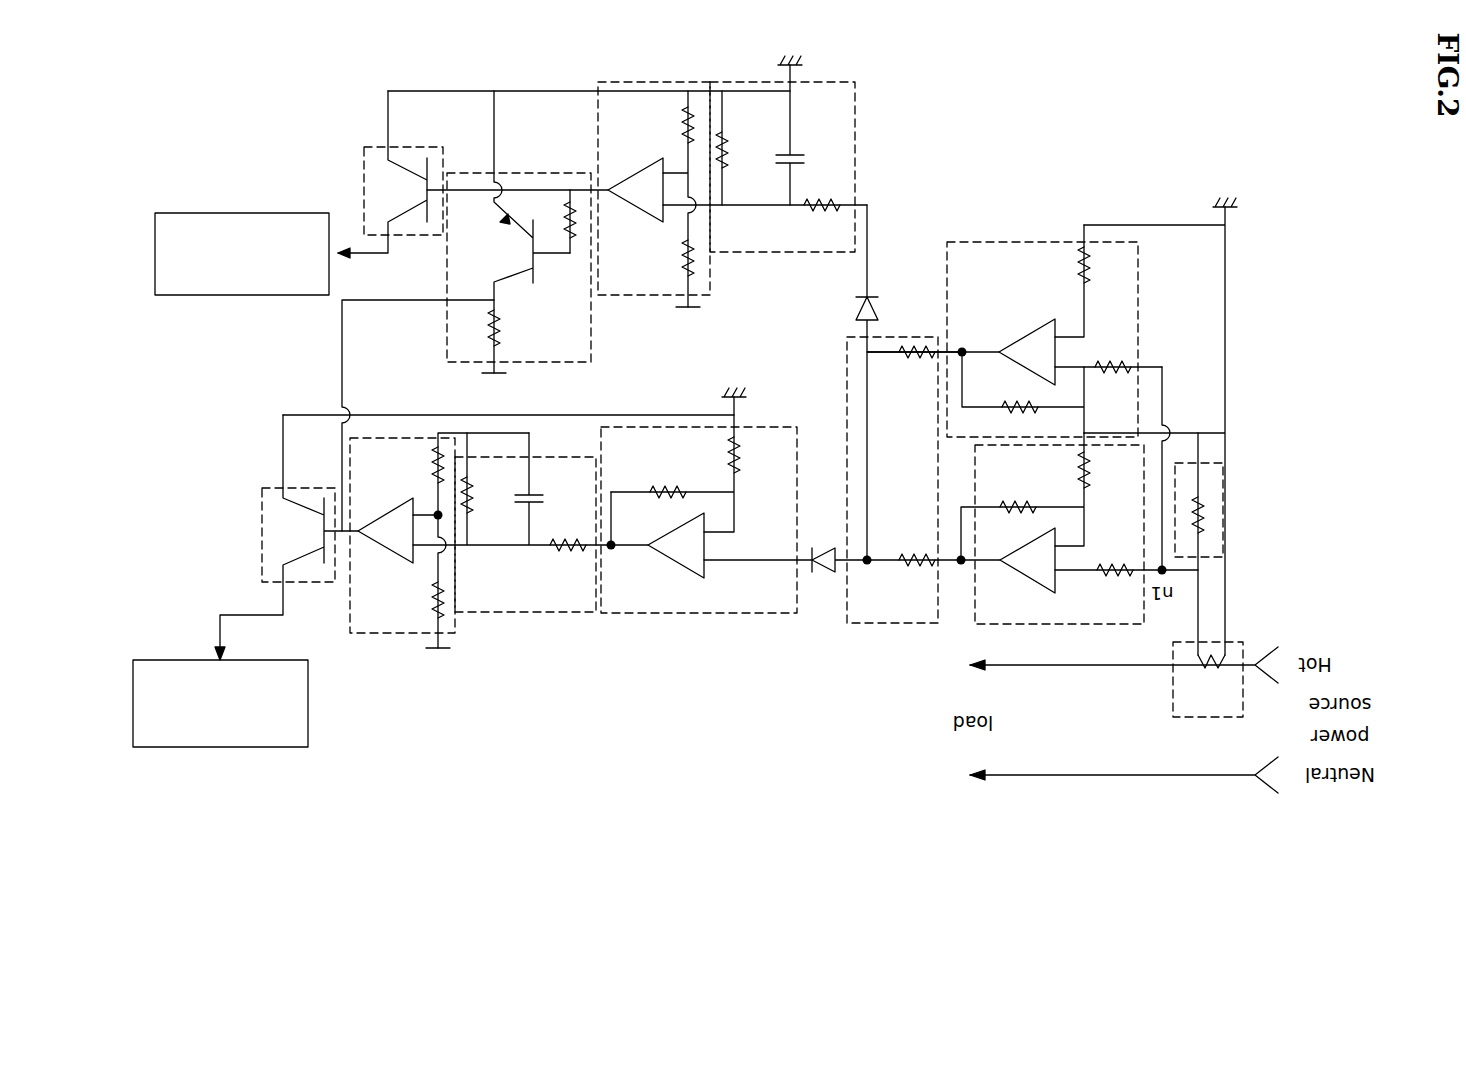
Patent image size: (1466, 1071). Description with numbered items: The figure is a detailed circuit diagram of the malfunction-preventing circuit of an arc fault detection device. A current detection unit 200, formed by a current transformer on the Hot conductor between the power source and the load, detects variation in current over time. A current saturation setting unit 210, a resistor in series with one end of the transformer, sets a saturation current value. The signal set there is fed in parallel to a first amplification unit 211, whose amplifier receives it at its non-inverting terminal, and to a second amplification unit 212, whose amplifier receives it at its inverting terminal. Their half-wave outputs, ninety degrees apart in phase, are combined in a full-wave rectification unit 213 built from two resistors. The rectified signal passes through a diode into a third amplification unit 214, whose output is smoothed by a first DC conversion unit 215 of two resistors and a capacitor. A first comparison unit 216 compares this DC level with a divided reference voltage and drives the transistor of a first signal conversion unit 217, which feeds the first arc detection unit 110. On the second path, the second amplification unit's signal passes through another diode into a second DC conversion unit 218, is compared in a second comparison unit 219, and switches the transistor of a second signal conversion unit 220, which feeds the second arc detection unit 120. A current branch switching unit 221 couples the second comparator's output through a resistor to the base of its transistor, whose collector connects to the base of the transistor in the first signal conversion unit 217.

The first arc detection unit 110 is at (225, 747).
The second arc detection unit 120 is at (235, 295).
The current detection unit 200 is at (1212, 633).
The current saturation setting unit 210 is at (1210, 455).
The first amplification unit 211 is at (950, 626).
The second amplification unit 212 is at (1135, 336).
The full-wave rectification unit 213 is at (888, 623).
The third amplification unit 214 is at (702, 613).
The first DC conversion unit 215 is at (525, 612).
The first comparison unit 216 is at (385, 636).
The first signal conversion unit 217 is at (258, 515).
The second DC conversion unit 218 is at (872, 130).
The second comparison unit 219 is at (592, 128).
The second signal conversion unit 220 is at (355, 180).
The current branch switching unit 221 is at (445, 350).